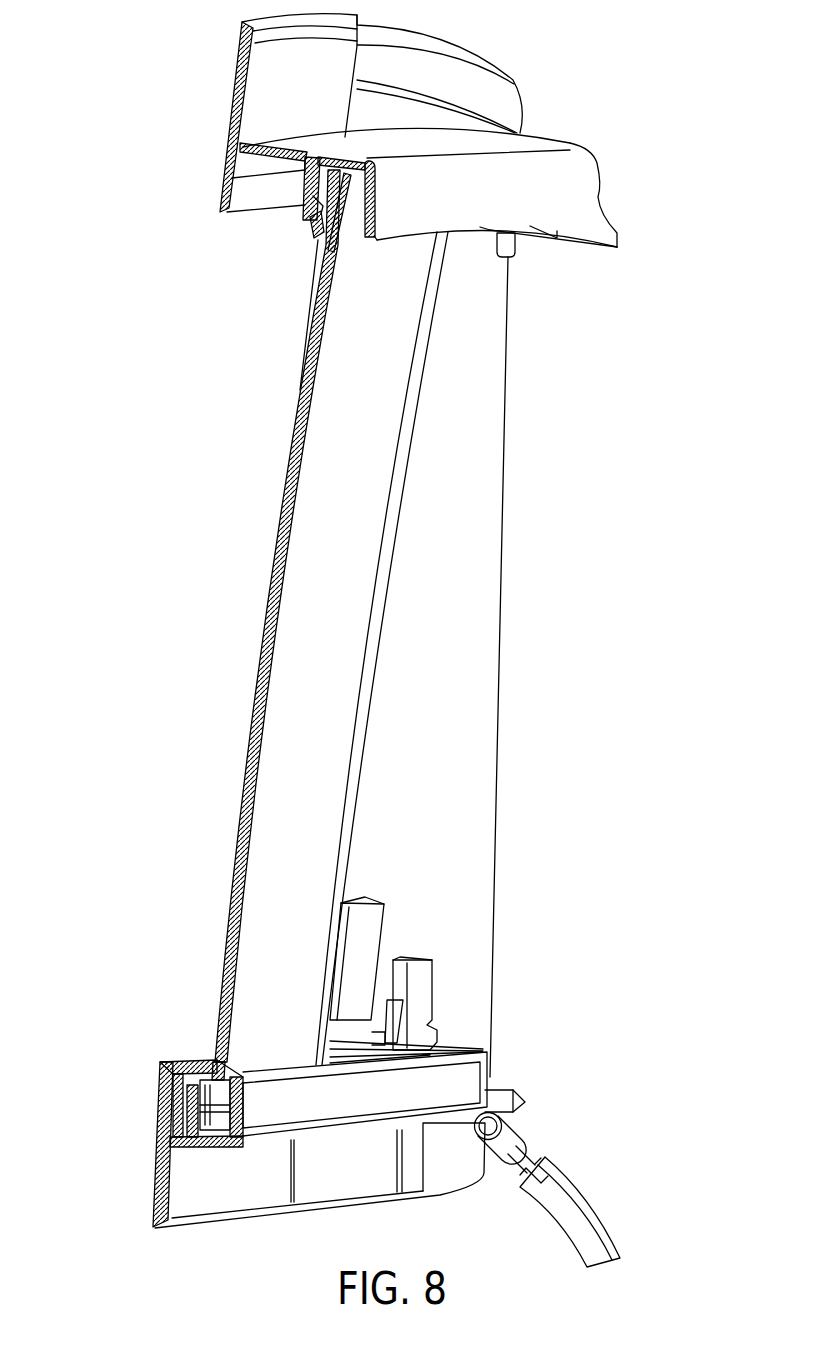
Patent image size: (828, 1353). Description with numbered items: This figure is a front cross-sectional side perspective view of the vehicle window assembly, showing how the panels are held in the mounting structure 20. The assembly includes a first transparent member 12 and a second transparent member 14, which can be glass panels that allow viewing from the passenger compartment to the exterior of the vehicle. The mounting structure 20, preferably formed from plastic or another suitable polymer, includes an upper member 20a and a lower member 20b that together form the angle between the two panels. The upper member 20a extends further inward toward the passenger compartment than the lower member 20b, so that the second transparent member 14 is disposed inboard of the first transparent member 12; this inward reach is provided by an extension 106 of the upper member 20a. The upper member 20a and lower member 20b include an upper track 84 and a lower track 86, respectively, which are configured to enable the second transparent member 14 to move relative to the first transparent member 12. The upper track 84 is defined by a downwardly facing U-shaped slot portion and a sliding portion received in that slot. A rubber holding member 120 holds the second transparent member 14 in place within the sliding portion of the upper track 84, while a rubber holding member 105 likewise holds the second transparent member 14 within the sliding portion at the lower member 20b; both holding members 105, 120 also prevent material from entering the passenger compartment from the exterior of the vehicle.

The first transparent member 12 is at (459, 748).
The second transparent member 14 is at (315, 660).
The mounting structure 20 is at (612, 180).
The upper member 20a is at (570, 170).
The lower member 20b is at (157, 1163).
The upper track 84 is at (376, 204).
The lower track 86 is at (242, 1106).
The rubber holding member 105 is at (310, 228).
The extension 106 is at (327, 152).
The rubber holding member 120 is at (210, 1055).